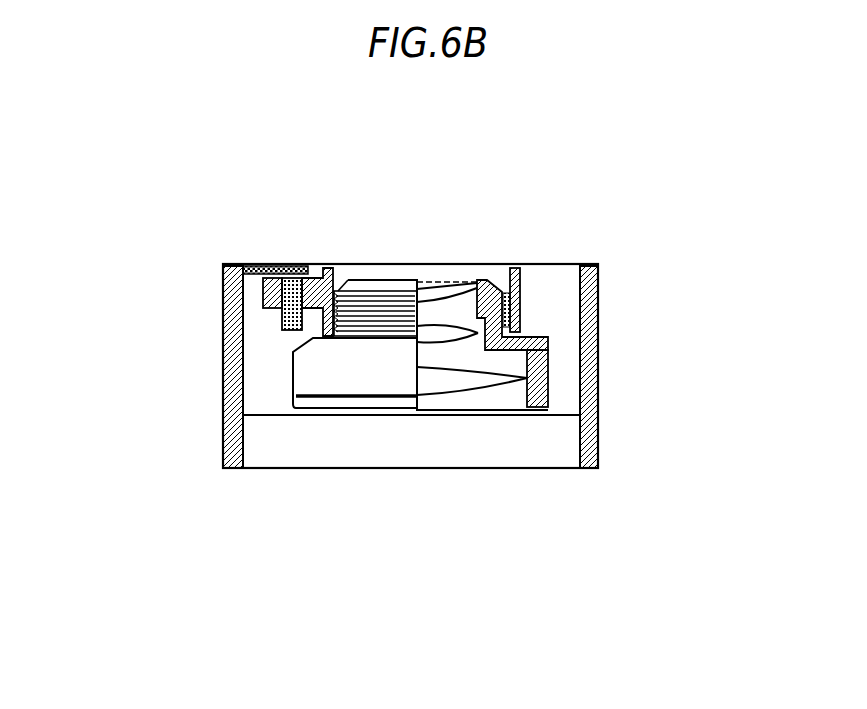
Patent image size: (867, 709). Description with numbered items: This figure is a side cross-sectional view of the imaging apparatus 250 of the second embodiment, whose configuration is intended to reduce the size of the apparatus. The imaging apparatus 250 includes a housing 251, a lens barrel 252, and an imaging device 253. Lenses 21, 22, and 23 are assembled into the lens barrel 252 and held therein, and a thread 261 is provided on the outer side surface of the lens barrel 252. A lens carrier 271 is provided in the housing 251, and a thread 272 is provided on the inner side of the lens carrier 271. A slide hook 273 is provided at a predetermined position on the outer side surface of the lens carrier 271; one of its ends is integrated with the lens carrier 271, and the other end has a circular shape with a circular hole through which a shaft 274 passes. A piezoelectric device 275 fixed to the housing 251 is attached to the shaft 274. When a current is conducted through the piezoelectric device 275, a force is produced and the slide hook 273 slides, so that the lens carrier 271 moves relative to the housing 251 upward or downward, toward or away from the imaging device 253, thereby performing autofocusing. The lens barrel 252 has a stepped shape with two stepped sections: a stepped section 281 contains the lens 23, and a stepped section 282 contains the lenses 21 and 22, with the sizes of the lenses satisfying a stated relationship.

The lens 21 is at (516, 317).
The lens 22 is at (491, 255).
The lens 23 is at (475, 380).
The imaging apparatus 250 is at (543, 517).
The housing 251 is at (232, 470).
The lens barrel 252 is at (495, 297).
The imaging device 253 is at (430, 472).
The thread 261 is at (375, 300).
The lens carrier 271 is at (327, 266).
The thread 272 is at (371, 224).
The slide hook 273 is at (263, 300).
The shaft 274 is at (282, 325).
The piezoelectric device 275 is at (255, 264).
The stepped section 281 is at (550, 375).
The stepped section 282 is at (520, 296).